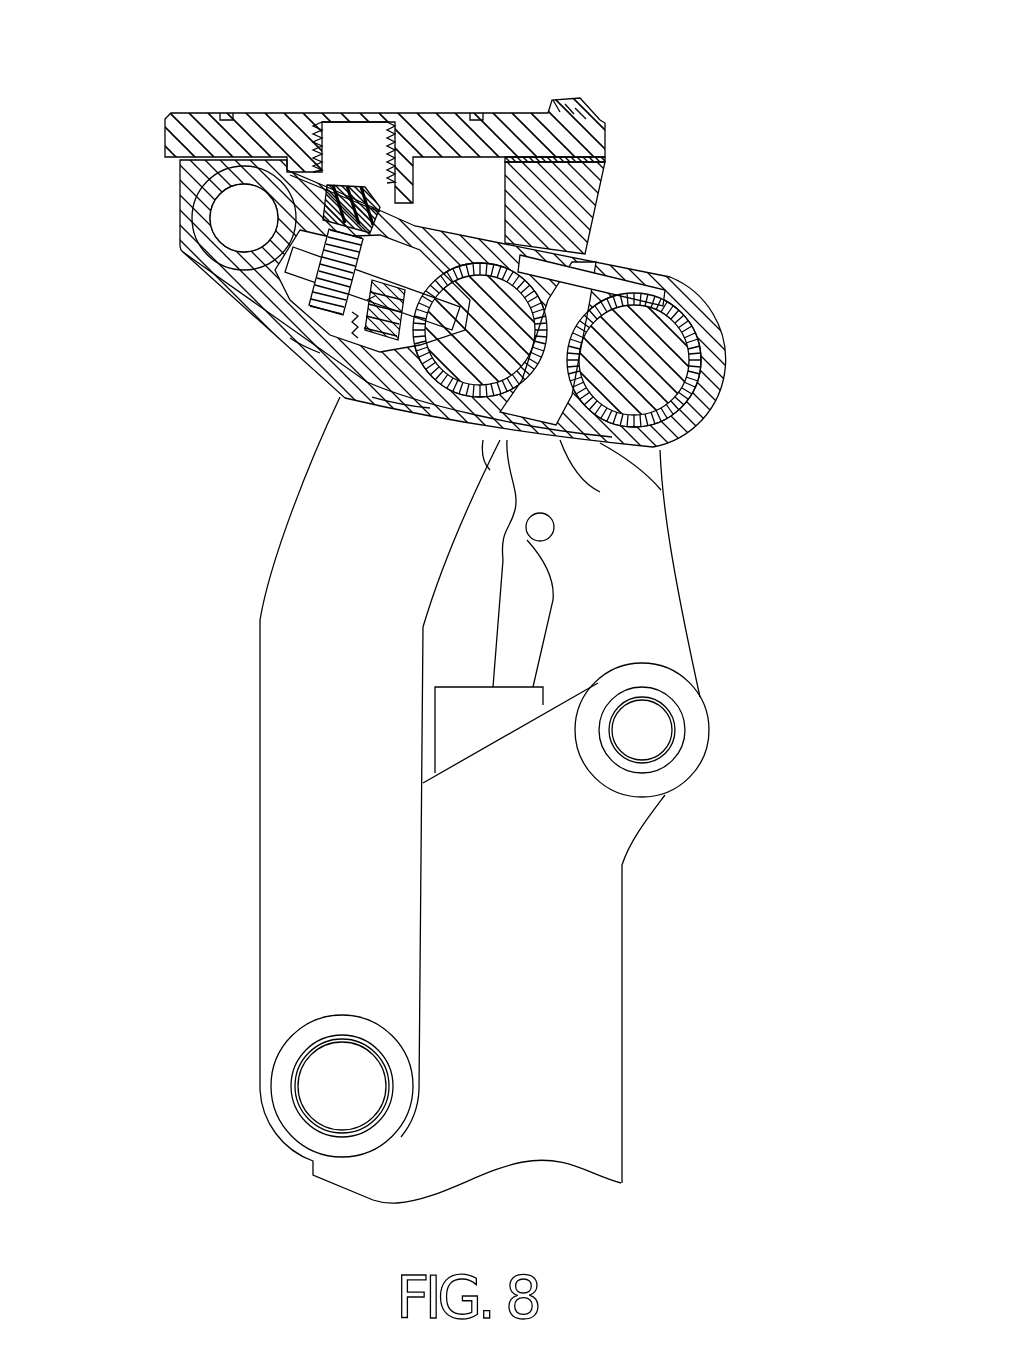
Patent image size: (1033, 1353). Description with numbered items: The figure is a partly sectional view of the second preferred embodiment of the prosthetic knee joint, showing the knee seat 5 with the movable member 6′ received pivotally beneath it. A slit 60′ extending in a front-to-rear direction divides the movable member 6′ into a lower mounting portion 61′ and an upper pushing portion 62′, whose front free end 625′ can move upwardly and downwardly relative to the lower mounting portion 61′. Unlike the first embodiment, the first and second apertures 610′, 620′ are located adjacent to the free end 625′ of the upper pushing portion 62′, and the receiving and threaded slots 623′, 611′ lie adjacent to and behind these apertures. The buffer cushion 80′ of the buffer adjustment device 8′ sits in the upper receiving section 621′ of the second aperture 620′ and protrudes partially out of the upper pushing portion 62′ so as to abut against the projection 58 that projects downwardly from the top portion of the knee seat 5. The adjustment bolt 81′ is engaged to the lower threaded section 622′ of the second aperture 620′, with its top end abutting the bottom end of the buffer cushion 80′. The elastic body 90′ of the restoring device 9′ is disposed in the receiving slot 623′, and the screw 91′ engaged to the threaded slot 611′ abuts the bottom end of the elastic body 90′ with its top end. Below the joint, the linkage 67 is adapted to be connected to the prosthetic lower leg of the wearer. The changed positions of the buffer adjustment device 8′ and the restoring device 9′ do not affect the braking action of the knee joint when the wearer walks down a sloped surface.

The knee seat 5 is at (465, 108).
The projection 58 is at (408, 150).
The buffer cushion 80′ is at (373, 147).
The upper receiving section 621′ is at (372, 200).
The second aperture 620′ is at (307, 253).
The lower threaded section 622′ is at (330, 228).
The free end 625′ is at (312, 236).
The receiving slot 623′ is at (415, 223).
The first roller 60′ is at (590, 290).
The upper pushing portion 62′ is at (677, 293).
The first aperture 610′ is at (285, 332).
The adjustment bolt 81′ is at (298, 313).
The buffer adjustment device 8′ is at (208, 417).
The elastic body 90′ is at (333, 358).
The screw 91′ is at (362, 348).
The threaded slot 611′ is at (372, 397).
The movable member 6′ is at (718, 413).
The lever 61′ is at (661, 490).
The restoring device 9′ is at (288, 472).
The linkage 67 is at (237, 913).